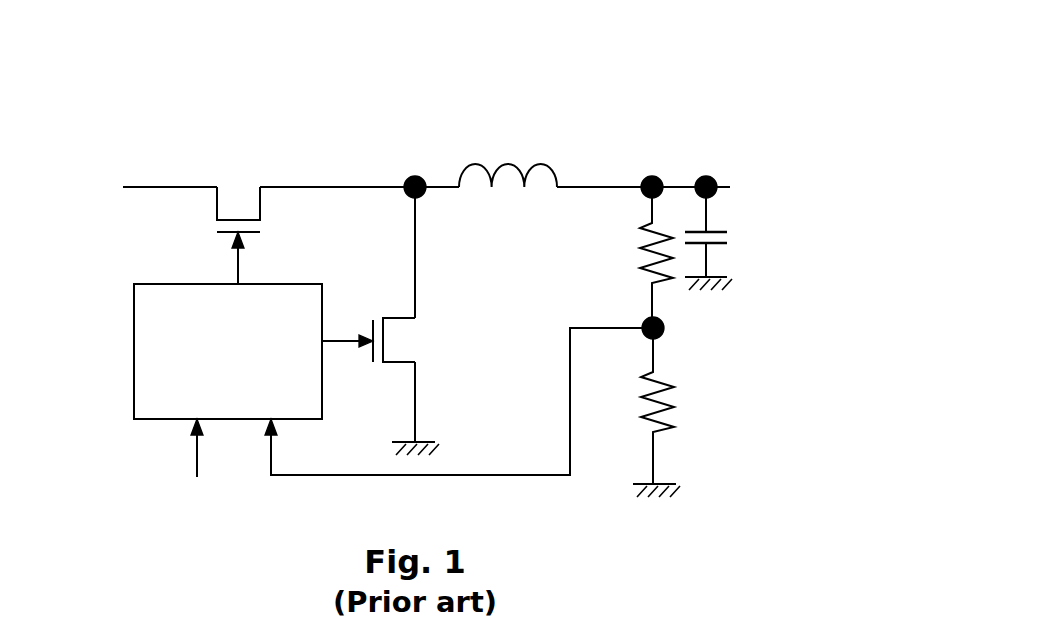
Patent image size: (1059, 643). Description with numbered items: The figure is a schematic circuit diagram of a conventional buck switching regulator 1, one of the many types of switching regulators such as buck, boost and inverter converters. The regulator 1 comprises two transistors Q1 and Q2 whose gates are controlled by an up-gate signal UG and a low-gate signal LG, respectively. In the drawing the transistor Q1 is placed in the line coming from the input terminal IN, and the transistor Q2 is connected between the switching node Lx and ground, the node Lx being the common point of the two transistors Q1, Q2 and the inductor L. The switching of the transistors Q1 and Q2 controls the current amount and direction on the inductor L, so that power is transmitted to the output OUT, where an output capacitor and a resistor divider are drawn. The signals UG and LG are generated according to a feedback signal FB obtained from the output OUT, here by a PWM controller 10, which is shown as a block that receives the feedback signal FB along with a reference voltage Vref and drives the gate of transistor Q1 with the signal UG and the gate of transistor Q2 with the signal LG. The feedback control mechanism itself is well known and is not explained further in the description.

The buck switching regulator 1 is at (637, 98).
The PWM controller 10 is at (214, 398).
The transistor Q1 is at (238, 191).
The transistor Q2 is at (412, 340).
The inductor L is at (491, 148).
The switching node Lx is at (419, 169).
The up-gate signal UG is at (261, 258).
The low-gate signal LG is at (347, 324).
The feedback signal FB is at (676, 330).
The input terminal IN is at (141, 187).
The output OUT is at (743, 188).
The reference voltage input Vref is at (198, 461).